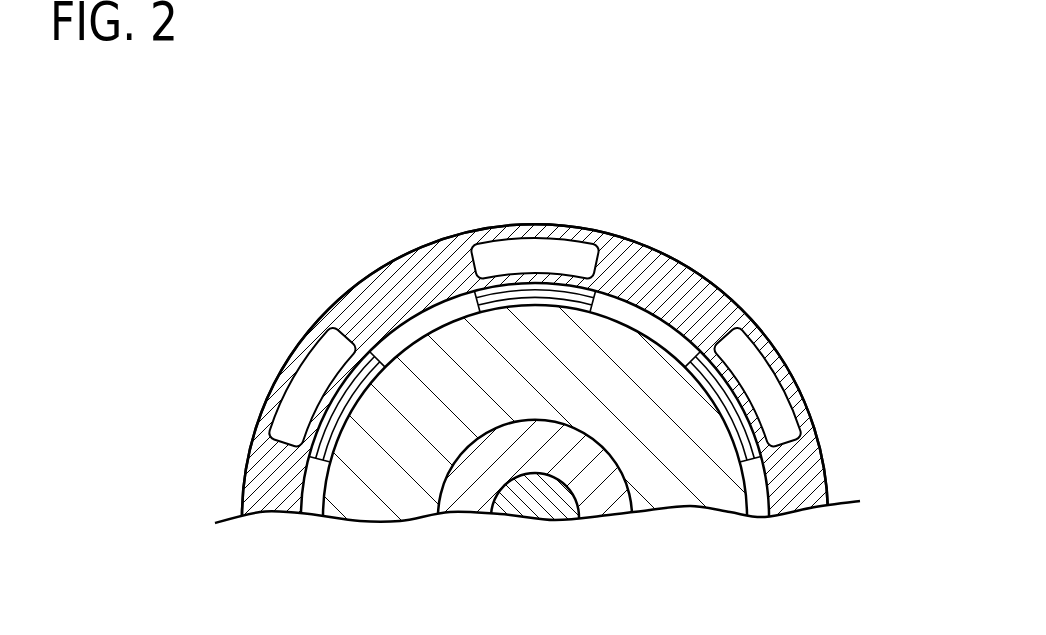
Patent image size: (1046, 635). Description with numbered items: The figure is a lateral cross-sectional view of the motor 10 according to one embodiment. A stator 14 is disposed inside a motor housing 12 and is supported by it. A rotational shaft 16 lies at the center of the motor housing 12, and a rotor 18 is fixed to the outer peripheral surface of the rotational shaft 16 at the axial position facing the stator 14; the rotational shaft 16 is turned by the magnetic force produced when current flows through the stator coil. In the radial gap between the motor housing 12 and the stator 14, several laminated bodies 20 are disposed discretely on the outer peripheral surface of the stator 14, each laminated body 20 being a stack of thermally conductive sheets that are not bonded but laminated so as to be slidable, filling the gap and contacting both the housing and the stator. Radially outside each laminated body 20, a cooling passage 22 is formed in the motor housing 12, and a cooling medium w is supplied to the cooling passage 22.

The motor 10 is at (586, 126).
The motor housing 12 is at (722, 300).
The stator 14 is at (631, 353).
The rotational shaft 16 is at (553, 507).
The rotor 18 is at (610, 503).
The laminated body 20 is at (600, 297).
The cooling passage 22 is at (750, 355).
The cooling medium w is at (766, 389).